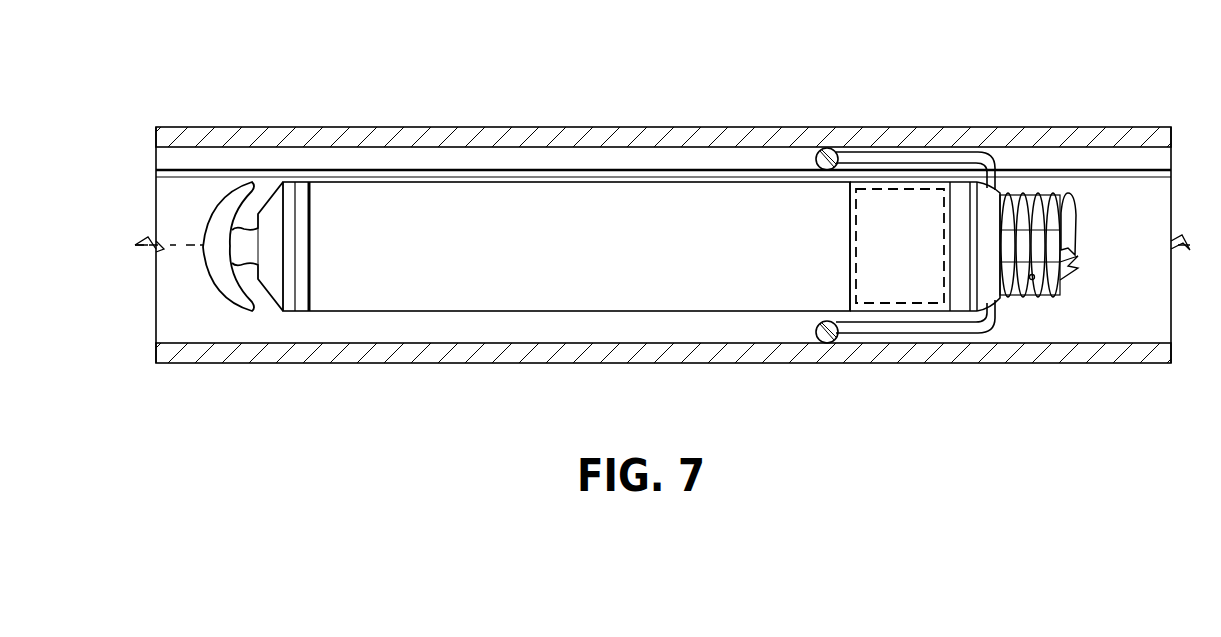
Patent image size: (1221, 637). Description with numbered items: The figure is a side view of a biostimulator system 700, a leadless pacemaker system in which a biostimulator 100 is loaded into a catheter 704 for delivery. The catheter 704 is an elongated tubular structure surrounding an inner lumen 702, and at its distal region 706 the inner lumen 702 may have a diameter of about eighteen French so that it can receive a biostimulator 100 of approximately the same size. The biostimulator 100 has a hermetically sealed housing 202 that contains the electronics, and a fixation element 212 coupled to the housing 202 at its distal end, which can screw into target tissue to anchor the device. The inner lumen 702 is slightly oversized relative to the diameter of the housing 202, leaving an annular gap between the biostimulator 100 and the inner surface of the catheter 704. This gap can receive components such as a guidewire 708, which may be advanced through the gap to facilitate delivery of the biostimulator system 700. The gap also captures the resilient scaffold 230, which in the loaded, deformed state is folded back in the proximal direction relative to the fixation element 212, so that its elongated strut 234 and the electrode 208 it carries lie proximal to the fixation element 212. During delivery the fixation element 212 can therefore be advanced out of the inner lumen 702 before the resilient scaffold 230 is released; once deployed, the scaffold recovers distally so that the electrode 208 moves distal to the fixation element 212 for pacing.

The biostimulator system 700 is at (172, 70).
The biostimulator 100 is at (352, 198).
The catheter 704 is at (358, 133).
The distal region 706 is at (1022, 372).
The guidewire 708 is at (1068, 168).
The inner lumen 702 is at (336, 332).
The housing 202 is at (620, 311).
The fixation element 212 is at (1076, 213).
The electrode 208 is at (821, 149).
The resilient scaffold 230 is at (921, 145).
The elongated strut 234 is at (975, 150).